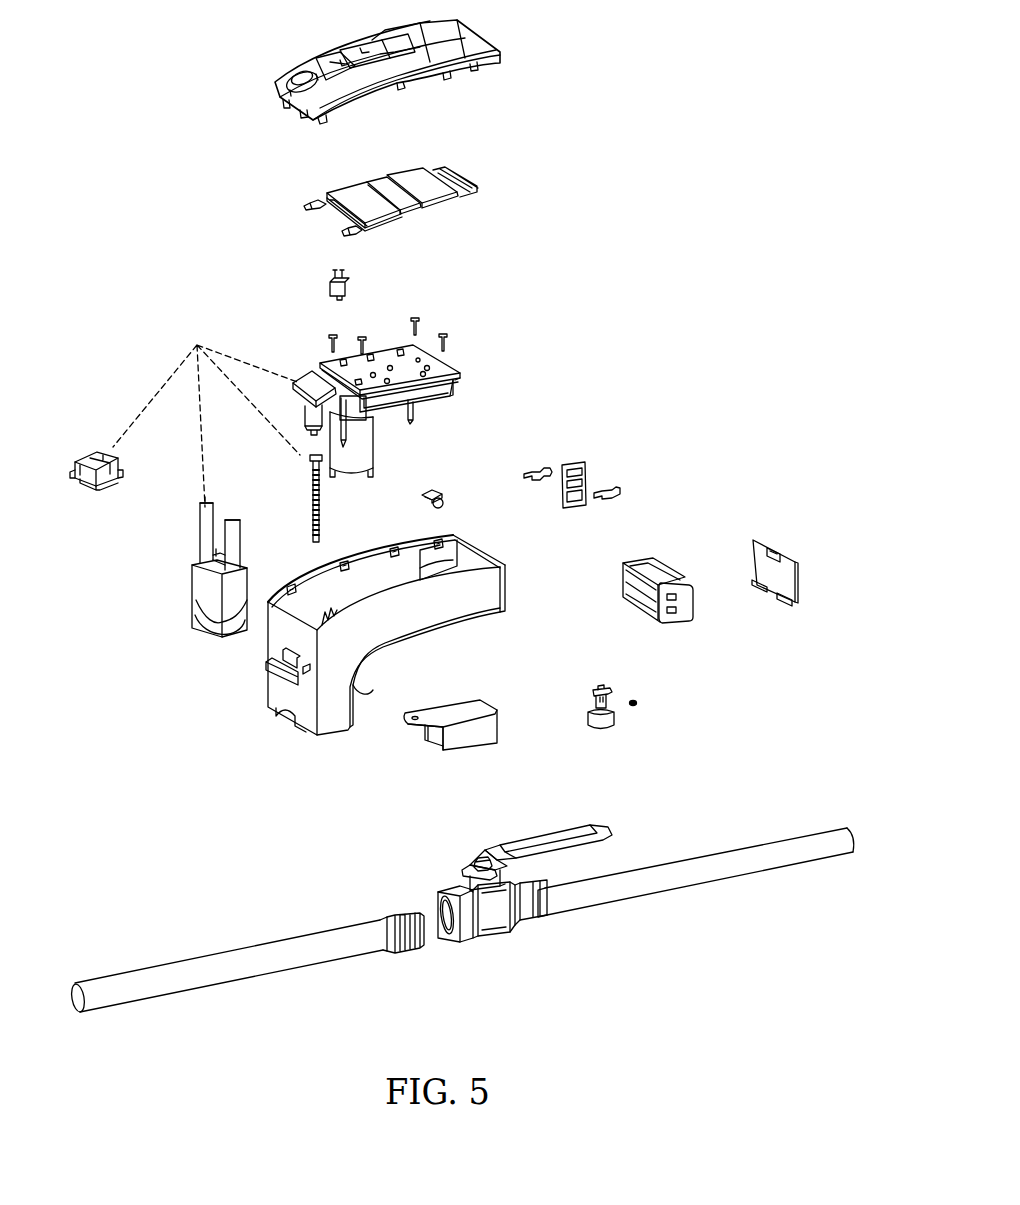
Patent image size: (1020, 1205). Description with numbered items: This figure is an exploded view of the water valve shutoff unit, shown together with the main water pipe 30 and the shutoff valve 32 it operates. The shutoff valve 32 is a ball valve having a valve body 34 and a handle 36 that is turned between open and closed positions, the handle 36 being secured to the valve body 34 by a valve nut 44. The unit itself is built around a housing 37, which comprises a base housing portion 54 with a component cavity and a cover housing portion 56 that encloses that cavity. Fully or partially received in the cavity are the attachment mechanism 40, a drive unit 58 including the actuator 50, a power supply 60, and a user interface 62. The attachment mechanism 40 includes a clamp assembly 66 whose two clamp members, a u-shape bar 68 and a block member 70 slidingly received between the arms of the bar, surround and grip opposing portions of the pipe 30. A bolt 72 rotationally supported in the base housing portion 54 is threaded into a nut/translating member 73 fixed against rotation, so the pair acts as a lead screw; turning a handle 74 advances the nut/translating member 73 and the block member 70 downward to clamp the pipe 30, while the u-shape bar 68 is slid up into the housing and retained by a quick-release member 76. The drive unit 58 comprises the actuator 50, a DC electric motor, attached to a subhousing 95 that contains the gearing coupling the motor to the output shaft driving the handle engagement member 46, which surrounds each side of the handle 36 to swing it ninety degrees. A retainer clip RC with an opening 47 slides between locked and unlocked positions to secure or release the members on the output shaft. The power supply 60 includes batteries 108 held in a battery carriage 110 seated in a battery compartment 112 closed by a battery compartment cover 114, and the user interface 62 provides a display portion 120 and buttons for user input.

The main water pipe 30 is at (688, 873).
The shutoff valve 32 is at (525, 906).
The valve body 34 is at (505, 918).
The handle 36 is at (560, 832).
The housing 37 is at (383, 628).
The attachment mechanism 40 is at (206, 414).
The valve nut 44 is at (590, 701).
The handle engagement member 46 is at (473, 747).
The opening 47 is at (425, 500).
The actuator 50 is at (367, 441).
The base housing portion 54 is at (360, 635).
The cover housing portion 56 is at (476, 38).
The drive unit 58 is at (398, 397).
The power supply 60 is at (665, 587).
The user interface 62 is at (382, 174).
The clamp assembly 66 is at (186, 592).
The u-shape bar 68 is at (228, 630).
The block member 70 is at (195, 592).
The bolt 72 is at (310, 472).
The nut/translating member 73 is at (95, 452).
The handle 74 is at (306, 376).
The quick-release member 76 is at (270, 672).
The subhousing 95 is at (437, 393).
The batteries 108 is at (647, 608).
The battery carriage 110 is at (687, 600).
The battery compartment 112 is at (478, 555).
The battery compartment cover 114 is at (790, 558).
The display portion 120 is at (347, 193).
The retainer clip RC is at (434, 494).